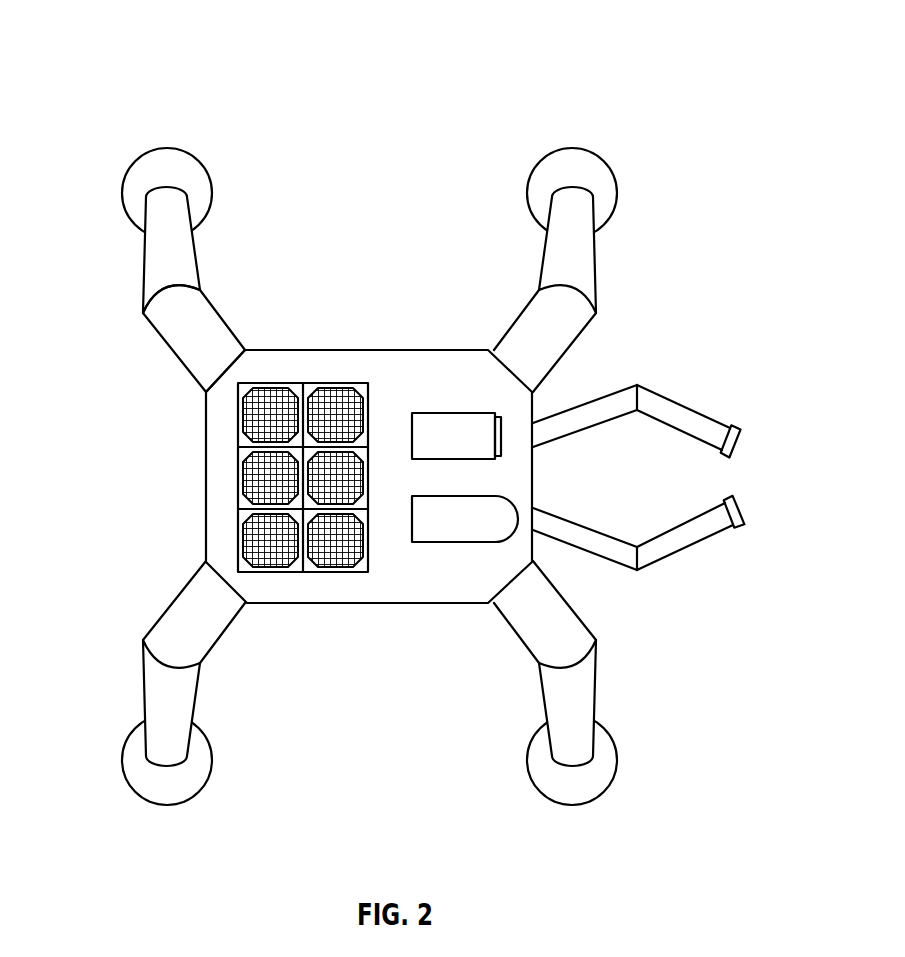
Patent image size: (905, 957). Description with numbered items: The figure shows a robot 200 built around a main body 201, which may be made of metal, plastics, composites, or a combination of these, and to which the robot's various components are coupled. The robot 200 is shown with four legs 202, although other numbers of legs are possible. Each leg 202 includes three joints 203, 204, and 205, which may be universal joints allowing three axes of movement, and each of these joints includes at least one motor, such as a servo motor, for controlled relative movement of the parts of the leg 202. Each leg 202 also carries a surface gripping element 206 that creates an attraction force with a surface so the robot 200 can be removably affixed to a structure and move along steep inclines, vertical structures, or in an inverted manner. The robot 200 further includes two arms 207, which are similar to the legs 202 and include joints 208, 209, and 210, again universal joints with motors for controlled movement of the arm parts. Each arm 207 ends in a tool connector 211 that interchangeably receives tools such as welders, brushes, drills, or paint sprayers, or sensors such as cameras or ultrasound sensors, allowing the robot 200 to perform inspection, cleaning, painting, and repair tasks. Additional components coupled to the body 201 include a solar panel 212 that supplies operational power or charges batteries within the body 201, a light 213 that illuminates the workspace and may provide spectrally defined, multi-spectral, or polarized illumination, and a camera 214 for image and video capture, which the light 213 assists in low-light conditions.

The robot 200 is at (125, 34).
The main body 201 is at (370, 605).
The leg 202 is at (182, 350).
The joint 203 is at (245, 350).
The joint 204 is at (202, 292).
The joint 205 is at (143, 207).
The surface gripping element 206 is at (167, 148).
The arm 207 is at (688, 408).
The joint 208 is at (533, 447).
The joint 209 is at (637, 412).
The joint 210 is at (723, 455).
The tool connector 211 is at (733, 437).
The solar panel 212 is at (250, 483).
The light 213 is at (463, 535).
The camera 214 is at (463, 427).